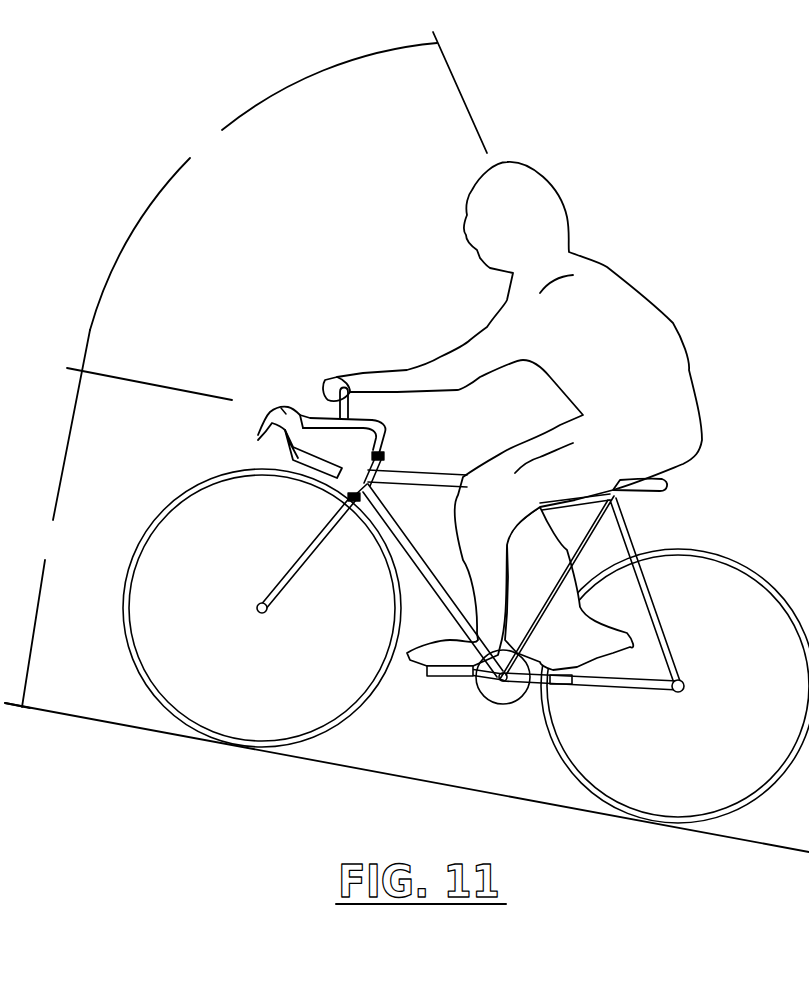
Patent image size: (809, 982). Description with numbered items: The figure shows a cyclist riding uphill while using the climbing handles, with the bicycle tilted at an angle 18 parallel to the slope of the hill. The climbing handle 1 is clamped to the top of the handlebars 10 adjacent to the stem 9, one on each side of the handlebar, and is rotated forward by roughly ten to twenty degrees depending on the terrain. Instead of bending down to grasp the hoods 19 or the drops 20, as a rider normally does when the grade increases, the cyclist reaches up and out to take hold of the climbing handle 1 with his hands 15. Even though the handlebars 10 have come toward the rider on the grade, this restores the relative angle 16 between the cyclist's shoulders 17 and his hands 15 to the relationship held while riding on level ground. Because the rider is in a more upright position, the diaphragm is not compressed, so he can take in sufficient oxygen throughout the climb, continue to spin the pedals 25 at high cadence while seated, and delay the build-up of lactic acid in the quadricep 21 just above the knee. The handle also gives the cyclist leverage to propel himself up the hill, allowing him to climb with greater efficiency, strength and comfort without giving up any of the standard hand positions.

The climbing handle 1 is at (338, 386).
The stem 9 is at (392, 445).
The handlebars 10 is at (365, 417).
The hands 15 is at (352, 372).
The relative angle 16 is at (263, 186).
The shoulders 17 is at (563, 275).
The angle 18 is at (47, 519).
The hoods 19 is at (271, 410).
The drops 20 is at (292, 455).
The quadricep 21 is at (575, 438).
The pedals 25 is at (440, 680).